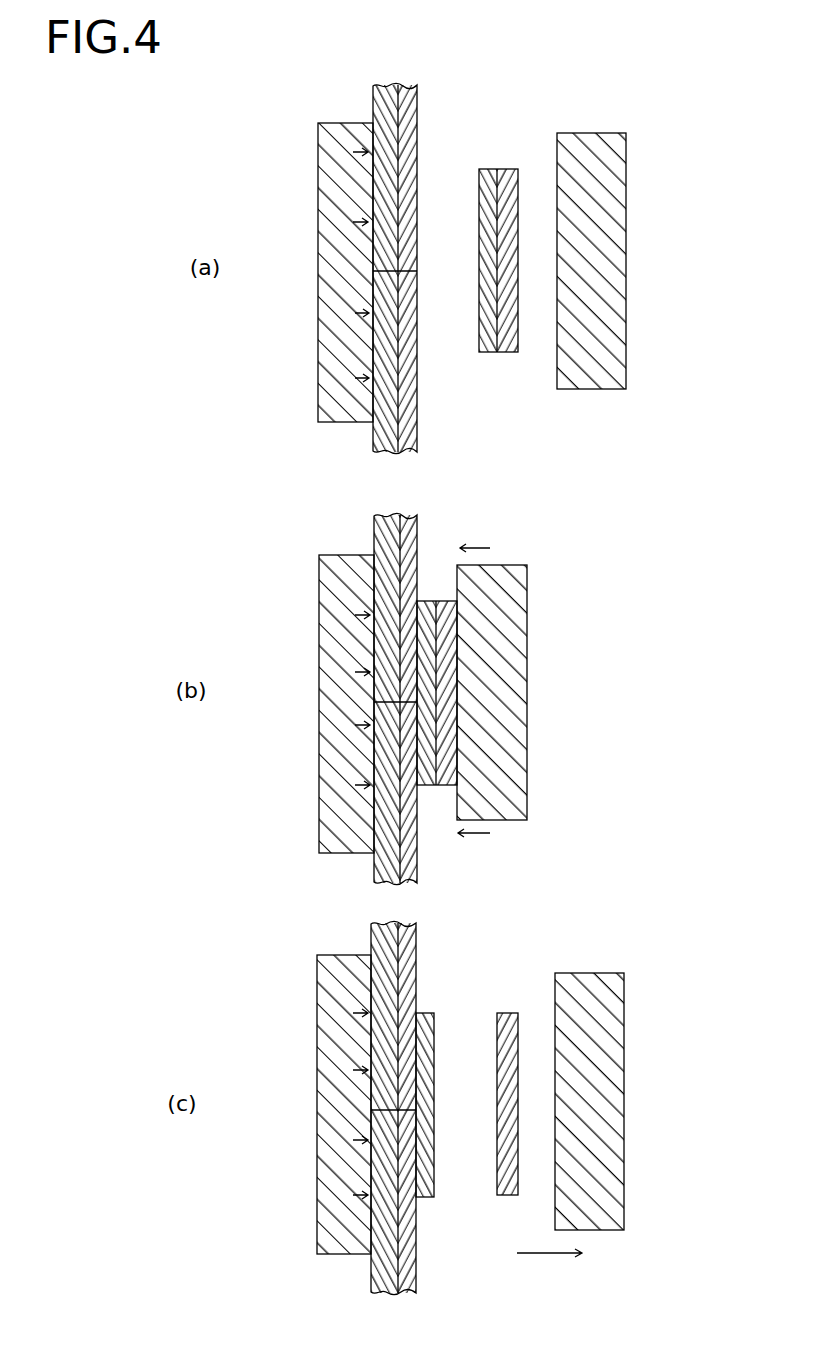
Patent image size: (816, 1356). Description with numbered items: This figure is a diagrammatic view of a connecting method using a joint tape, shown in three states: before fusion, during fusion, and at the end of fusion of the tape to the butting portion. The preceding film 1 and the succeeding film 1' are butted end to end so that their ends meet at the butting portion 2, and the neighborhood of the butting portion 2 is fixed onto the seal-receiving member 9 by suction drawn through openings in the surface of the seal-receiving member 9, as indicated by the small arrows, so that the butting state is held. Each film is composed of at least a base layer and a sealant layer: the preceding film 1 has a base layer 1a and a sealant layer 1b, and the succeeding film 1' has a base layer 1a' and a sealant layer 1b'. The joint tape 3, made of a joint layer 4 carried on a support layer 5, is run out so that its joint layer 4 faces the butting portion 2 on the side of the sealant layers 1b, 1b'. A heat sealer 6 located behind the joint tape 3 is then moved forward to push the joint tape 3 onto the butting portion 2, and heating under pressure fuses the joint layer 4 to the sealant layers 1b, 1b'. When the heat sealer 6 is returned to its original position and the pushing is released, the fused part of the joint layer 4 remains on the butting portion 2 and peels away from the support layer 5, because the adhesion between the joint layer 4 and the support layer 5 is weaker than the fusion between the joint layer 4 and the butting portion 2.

The preceding film 1 is at (347, 690).
The succeeding film 1' is at (345, 592).
The base layer 1a is at (335, 782).
The base layer 1a' is at (329, 597).
The sealant layer 1b is at (441, 782).
The sealant layer 1b' is at (447, 597).
The butting portion 2 is at (361, 276).
The joint tape 3 is at (506, 161).
The joint layer 4 is at (487, 353).
The support layer 5 is at (513, 353).
The heat sealer 6 is at (605, 170).
The seal-receiving member 9 is at (343, 313).